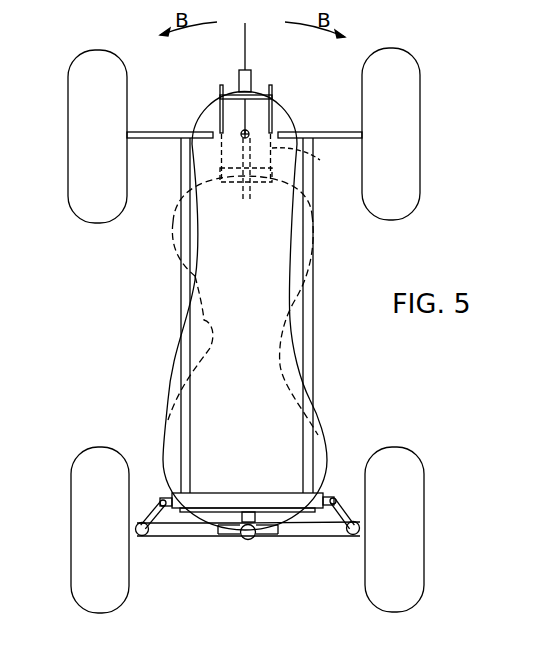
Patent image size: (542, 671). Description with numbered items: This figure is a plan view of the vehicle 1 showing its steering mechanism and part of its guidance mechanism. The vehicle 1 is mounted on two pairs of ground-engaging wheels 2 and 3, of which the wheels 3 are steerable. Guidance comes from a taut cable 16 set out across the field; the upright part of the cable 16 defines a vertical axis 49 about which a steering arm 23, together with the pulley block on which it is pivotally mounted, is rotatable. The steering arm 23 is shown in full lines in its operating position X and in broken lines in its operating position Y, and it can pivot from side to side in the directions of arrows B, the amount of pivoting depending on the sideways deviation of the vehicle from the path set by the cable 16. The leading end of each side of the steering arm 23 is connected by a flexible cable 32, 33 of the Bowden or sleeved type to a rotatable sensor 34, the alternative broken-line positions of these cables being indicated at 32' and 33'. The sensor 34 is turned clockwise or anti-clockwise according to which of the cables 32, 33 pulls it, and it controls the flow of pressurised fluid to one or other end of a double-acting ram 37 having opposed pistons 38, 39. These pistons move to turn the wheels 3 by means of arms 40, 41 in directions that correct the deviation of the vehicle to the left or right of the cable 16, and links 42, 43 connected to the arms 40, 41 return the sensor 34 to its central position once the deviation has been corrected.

The vehicle 1 is at (313, 313).
The ground-engaging wheels 2 is at (115, 92).
The steerable wheels 3 is at (100, 462).
The cable 16 is at (249, 46).
The steering arm 23 is at (275, 118).
The vertical axis 49 is at (243, 132).
The flexible cable 32 is at (206, 243).
The front wheel turned position 32' is at (200, 348).
The flexible cable 33 is at (281, 257).
The front wheel turned position 33' is at (319, 367).
The double-acting ram 37 is at (262, 497).
The piston 38 is at (162, 498).
The piston 39 is at (328, 496).
The arm 40 is at (148, 537).
The arm 41 is at (343, 518).
The link 42 is at (193, 540).
The link 43 is at (311, 538).
The rotatable sensor 34 is at (252, 541).